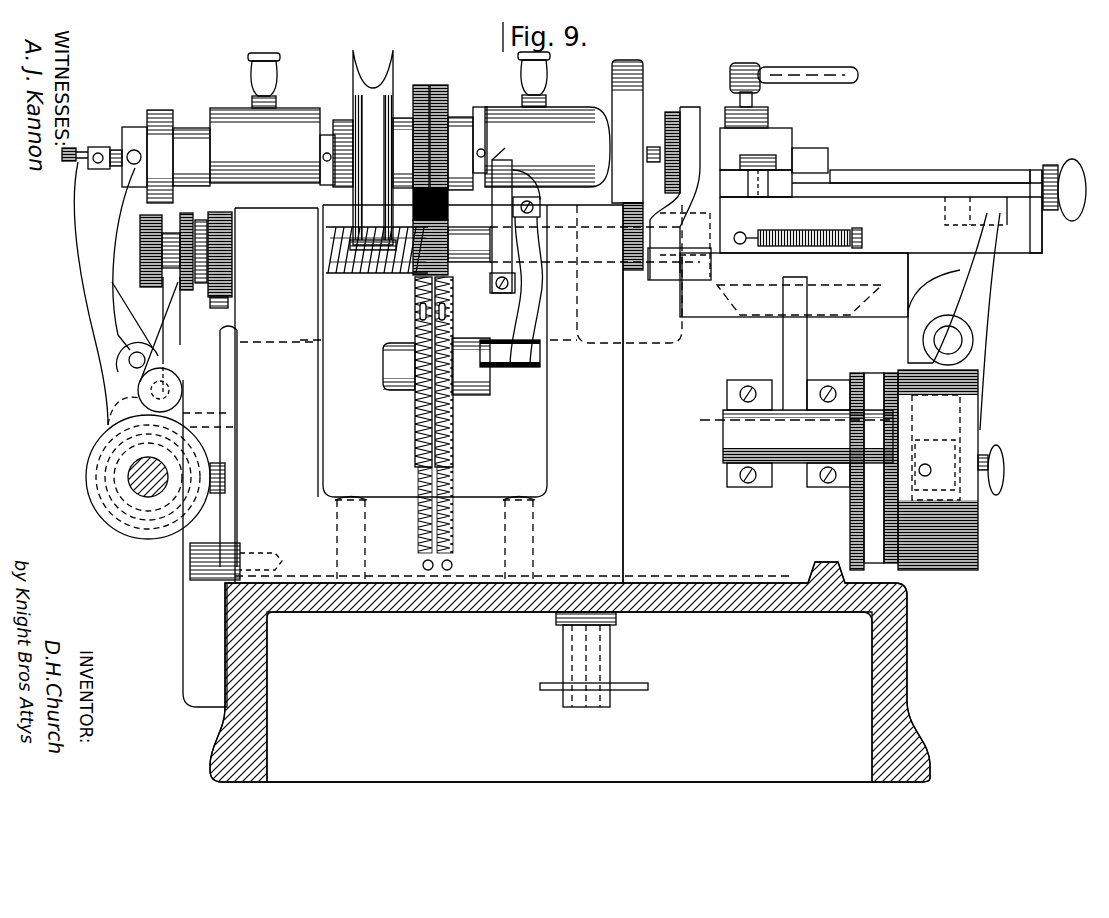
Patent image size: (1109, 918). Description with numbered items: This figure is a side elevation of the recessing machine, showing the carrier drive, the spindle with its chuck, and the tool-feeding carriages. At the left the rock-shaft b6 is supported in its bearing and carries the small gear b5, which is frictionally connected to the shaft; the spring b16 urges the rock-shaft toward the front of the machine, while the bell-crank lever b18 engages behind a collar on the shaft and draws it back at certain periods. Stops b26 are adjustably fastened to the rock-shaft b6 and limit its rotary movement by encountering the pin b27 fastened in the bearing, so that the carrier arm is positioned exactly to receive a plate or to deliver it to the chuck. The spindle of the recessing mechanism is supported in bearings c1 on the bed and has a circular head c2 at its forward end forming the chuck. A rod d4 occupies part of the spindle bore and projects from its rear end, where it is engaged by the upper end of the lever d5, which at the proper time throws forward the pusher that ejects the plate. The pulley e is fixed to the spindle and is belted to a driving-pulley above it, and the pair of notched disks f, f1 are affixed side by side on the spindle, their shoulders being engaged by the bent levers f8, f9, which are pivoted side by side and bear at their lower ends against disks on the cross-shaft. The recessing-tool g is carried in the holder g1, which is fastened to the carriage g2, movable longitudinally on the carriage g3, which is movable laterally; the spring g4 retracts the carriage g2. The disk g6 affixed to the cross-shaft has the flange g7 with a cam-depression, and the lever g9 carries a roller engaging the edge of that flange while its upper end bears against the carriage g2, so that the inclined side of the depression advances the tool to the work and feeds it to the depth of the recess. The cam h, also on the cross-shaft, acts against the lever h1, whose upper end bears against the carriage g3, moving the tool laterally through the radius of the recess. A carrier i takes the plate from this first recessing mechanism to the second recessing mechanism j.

The rod d4 is at (116, 152).
The lever d5 is at (88, 297).
The bearings c1 is at (232, 112).
The pulley e is at (362, 95).
The disk f1 is at (420, 80).
The disk f is at (446, 102).
The circular head c2 is at (614, 85).
The carrier i is at (688, 118).
The holder g1 is at (785, 135).
The recessing-tool g is at (822, 147).
The second recessing mechanism j is at (917, 159).
The spring g4 is at (838, 228).
The carriage g2 is at (920, 207).
The carriage g3 is at (752, 320).
The lever g9 is at (970, 333).
The flange g7 is at (967, 420).
The lever h1 is at (872, 442).
The cam h is at (862, 548).
The bent lever f9 is at (415, 422).
The bent lever f8 is at (453, 425).
The stops b26 is at (512, 327).
The pin b27 is at (535, 370).
The spring b16 is at (355, 278).
The small gear b5 is at (230, 263).
The rock-shaft b6 is at (157, 242).
The bell-crank lever b18 is at (165, 348).
The disk g6 is at (880, 560).